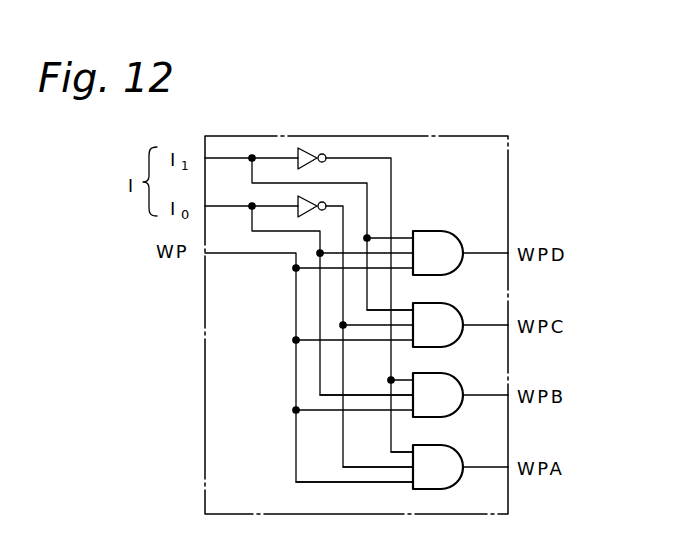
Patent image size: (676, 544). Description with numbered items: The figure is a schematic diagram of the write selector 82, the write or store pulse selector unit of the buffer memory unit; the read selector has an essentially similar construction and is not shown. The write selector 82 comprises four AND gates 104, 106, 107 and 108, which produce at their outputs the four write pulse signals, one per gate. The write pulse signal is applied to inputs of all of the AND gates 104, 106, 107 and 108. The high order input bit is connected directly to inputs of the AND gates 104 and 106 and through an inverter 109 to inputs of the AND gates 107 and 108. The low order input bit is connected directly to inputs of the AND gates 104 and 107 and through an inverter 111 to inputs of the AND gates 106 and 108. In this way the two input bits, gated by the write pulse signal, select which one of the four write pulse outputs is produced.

The write selector 82 is at (508, 191).
The AND gate 104 is at (466, 242).
The AND gate 106 is at (478, 299).
The AND gate 107 is at (478, 374).
The AND gate 108 is at (462, 462).
The inverter 109 is at (311, 152).
The inverter 111 is at (305, 196).